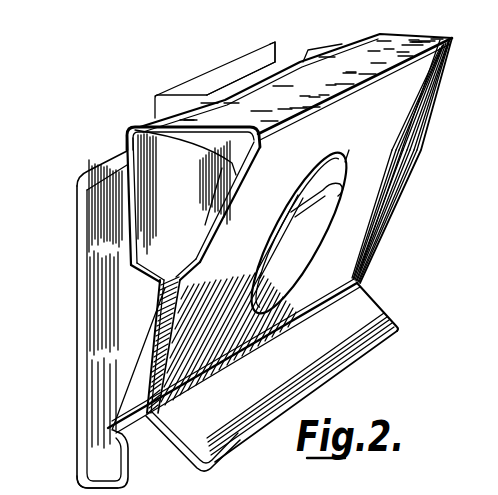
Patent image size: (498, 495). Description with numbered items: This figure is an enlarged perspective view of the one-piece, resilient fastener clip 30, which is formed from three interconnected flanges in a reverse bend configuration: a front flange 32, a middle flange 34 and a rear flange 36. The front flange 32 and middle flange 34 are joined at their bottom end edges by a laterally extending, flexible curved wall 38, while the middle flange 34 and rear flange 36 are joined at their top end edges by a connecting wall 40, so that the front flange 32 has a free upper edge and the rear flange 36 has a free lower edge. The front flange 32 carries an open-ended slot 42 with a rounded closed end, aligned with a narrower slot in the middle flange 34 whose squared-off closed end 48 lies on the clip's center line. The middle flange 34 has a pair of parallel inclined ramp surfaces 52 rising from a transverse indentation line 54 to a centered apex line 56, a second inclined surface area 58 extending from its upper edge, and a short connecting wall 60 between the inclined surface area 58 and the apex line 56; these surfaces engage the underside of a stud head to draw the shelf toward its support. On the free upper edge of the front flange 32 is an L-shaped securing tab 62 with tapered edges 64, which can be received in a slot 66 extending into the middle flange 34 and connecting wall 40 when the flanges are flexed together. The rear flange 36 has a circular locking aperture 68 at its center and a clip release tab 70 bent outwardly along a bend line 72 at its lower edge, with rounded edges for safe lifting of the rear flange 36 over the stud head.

The fastener clip 30 is at (408, 182).
The front flange 32 is at (110, 272).
The middle flange 34 is at (128, 174).
The rear flange 36 is at (392, 126).
The curved wall 38 is at (147, 456).
The connecting wall 40 is at (372, 42).
The slot 42 is at (134, 298).
The closed end 48 is at (140, 127).
The inclined ramp surfaces 52 is at (308, 247).
The indentation line 54 is at (113, 443).
The apex line 56 is at (340, 187).
The inclined surface area 58 is at (182, 186).
The connecting wall 60 is at (213, 329).
The securing tab 62 is at (234, 68).
The tapered edges 64 is at (182, 96).
The slot 66 is at (303, 58).
The locking aperture 68 is at (326, 242).
The clip release tab 70 is at (298, 385).
The bend line 72 is at (360, 286).